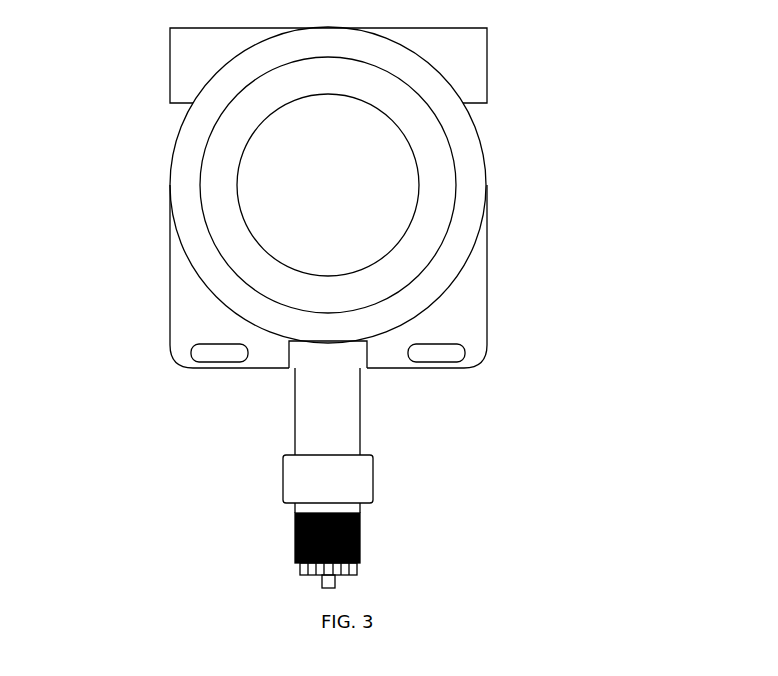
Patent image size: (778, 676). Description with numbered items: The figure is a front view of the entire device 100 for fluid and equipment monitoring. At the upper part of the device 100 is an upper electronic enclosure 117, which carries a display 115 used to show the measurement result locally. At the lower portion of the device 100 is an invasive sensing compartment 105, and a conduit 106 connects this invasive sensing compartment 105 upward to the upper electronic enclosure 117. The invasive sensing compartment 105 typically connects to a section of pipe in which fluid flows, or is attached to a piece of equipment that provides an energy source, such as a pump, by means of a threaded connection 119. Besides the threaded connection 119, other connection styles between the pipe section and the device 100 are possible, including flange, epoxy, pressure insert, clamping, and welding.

The device 100 is at (487, 187).
The upper electronic enclosure 117 is at (183, 172).
The display 115 is at (273, 212).
The conduit 106 is at (347, 422).
The invasive sensing compartment 105 is at (363, 487).
The threaded connection 119 is at (360, 548).